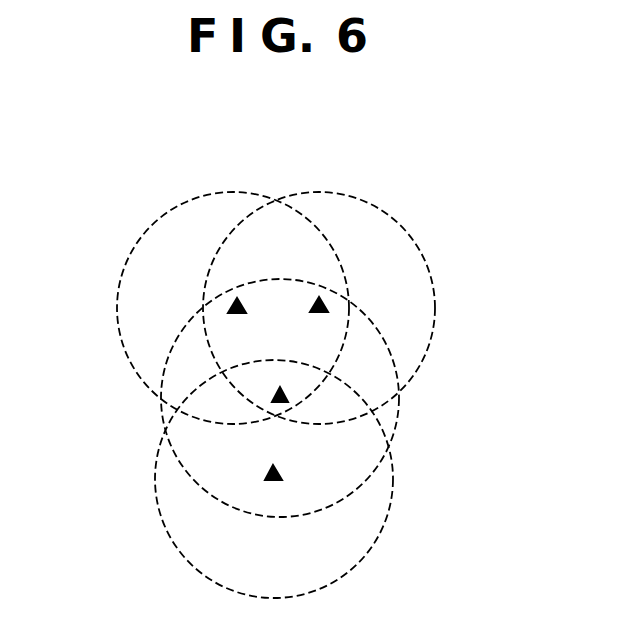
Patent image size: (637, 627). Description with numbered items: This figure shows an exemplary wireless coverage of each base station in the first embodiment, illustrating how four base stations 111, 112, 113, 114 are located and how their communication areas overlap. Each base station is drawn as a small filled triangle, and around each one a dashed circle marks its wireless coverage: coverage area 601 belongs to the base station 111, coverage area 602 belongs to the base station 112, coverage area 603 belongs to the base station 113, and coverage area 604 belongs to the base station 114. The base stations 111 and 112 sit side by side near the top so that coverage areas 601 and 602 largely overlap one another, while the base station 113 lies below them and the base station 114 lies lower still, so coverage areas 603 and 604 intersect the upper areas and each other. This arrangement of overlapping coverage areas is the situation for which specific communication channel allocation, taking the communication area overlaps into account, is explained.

The coverage area of the base station 111 601 is at (170, 211).
The coverage area of the base station 112 602 is at (419, 251).
The coverage area of the base station 113 603 is at (398, 412).
The coverage area of the base station 114 604 is at (390, 507).
The base station 111 is at (240, 298).
The base station 112 is at (320, 297).
The base station 113 is at (277, 391).
The base station 114 is at (268, 474).